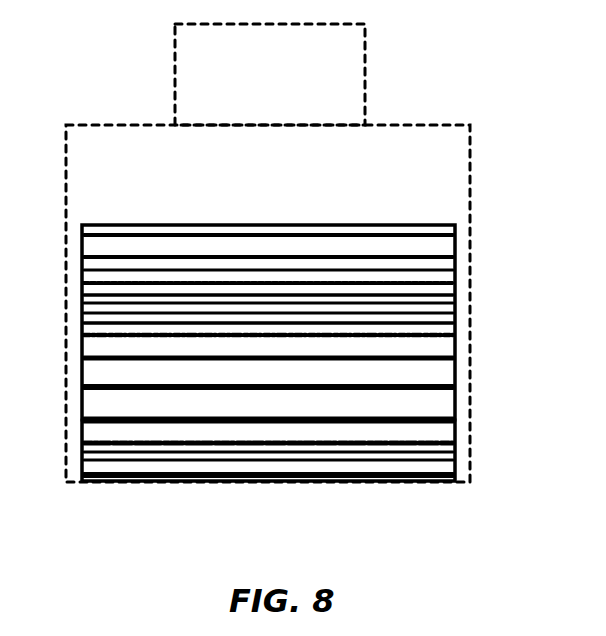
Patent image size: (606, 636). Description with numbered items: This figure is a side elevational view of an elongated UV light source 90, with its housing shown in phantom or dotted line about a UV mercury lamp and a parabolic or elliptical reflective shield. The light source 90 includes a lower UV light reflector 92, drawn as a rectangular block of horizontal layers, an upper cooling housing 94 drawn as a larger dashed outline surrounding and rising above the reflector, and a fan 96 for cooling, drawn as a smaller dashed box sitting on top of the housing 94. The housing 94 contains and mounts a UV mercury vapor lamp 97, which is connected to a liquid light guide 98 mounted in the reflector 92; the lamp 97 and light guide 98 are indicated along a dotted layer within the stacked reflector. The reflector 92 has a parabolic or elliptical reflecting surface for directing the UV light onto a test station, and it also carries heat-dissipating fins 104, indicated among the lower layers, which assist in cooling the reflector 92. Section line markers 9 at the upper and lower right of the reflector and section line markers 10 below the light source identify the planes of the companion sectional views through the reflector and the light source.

The elongated UV light source 90 is at (494, 73).
The lower UV light reflector 92 is at (170, 232).
The upper cooling housing 94 is at (471, 136).
The fan 96 is at (366, 53).
The UV mercury vapor lamp 97 is at (80, 299).
The liquid light guide 98 is at (456, 325).
The heat-dissipating fins 104 is at (430, 393).
The section line 9- 9 is at (455, 217).
The section line 10- 10 is at (112, 547).